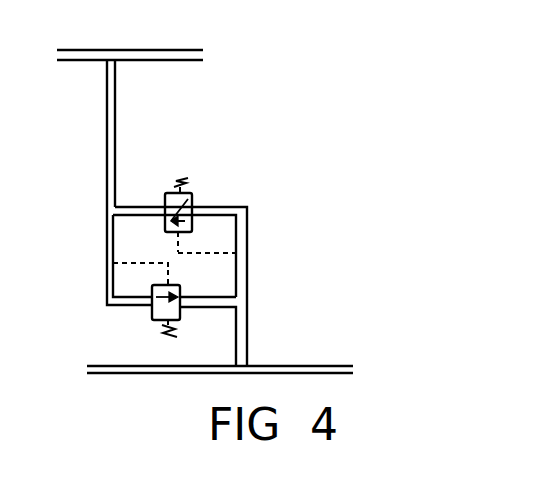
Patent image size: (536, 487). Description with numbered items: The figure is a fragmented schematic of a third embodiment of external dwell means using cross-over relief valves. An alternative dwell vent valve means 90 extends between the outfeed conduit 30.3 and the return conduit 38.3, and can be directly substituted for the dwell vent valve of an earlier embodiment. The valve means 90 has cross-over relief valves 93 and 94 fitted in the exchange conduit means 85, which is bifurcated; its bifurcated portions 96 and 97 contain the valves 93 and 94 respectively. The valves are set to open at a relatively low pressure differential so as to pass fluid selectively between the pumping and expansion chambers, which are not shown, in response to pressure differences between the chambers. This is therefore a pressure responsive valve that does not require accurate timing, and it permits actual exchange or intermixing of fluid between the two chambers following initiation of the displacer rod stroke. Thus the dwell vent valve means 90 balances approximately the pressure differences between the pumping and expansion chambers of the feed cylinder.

The outfeed conduit 30.3 is at (133, 50).
The exchange conduit means 85 is at (115, 118).
The bifurcated portion 96 is at (133, 207).
The cross-over relief valve 93 is at (192, 196).
The dwell vent valve means 90 is at (257, 189).
The bifurcated portion 97 is at (200, 297).
The cross-over relief valve 94 is at (152, 316).
The return conduit 38.3 is at (297, 366).